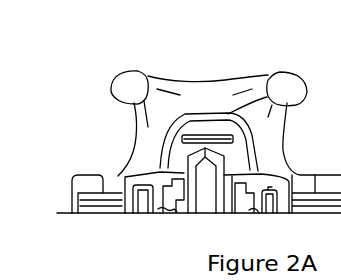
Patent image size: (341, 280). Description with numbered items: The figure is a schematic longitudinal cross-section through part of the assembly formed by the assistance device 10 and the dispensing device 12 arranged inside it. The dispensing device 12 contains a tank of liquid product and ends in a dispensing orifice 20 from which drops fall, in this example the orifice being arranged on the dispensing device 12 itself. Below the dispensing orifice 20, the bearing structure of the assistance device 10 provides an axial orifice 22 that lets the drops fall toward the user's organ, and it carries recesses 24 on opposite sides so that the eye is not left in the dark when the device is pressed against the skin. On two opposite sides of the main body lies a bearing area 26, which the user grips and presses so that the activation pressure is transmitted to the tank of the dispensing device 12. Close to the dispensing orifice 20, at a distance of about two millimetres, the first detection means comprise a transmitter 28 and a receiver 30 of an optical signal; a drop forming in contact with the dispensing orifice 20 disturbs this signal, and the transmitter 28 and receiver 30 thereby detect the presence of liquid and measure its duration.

The assistance device 10 is at (135, 150).
The dispensing device 12 is at (208, 196).
The dispensing orifice 20 is at (298, 84).
The axial orifice 22 is at (176, 56).
The recesses 24 is at (114, 121).
The bearing area 26 is at (160, 77).
The transmitter 28 is at (208, 144).
The receiver 30 is at (207, 139).